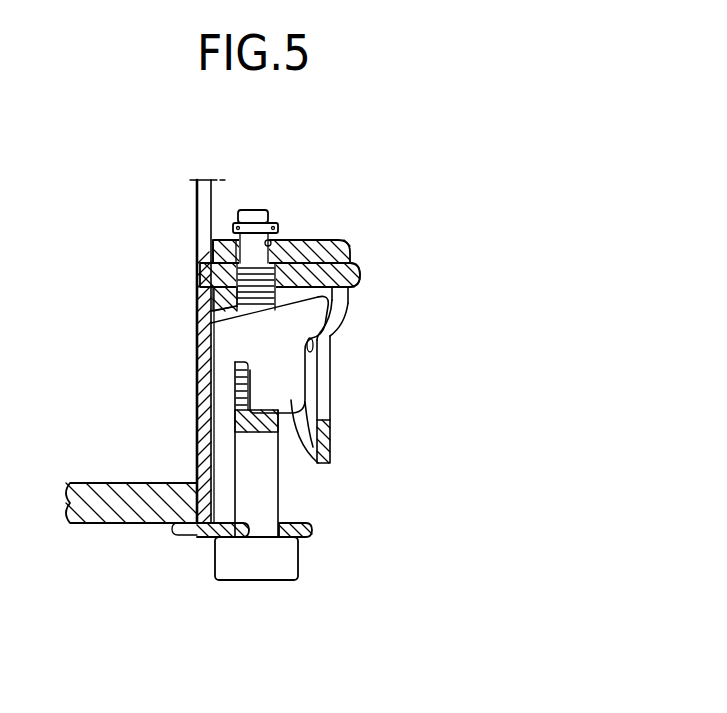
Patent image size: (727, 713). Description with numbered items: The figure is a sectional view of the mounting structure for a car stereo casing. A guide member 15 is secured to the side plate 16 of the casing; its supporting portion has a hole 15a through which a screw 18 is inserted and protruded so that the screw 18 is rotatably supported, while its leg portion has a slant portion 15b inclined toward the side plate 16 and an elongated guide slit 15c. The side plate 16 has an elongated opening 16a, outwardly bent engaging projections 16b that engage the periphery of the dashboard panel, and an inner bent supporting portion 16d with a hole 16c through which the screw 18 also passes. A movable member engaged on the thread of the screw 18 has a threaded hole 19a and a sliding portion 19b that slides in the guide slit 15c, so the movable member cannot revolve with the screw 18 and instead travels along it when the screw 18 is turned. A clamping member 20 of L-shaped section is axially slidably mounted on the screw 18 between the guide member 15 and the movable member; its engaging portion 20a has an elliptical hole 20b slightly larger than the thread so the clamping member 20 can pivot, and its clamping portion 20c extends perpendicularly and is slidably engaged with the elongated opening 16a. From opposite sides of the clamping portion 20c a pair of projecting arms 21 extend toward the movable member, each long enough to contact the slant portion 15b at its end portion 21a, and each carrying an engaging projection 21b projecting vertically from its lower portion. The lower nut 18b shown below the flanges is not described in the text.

The guide member 15 is at (332, 442).
The hole 15a is at (270, 242).
The slant portion 15b is at (343, 331).
The guide slit 15c is at (333, 393).
The side plate 16 is at (194, 222).
The elongated opening 16a is at (204, 433).
The engaging projections 16b is at (185, 536).
The hole 16c is at (245, 540).
The supporting portion 16d is at (290, 520).
The screw 18 is at (292, 402).
The nut of bolt 18b is at (268, 560).
The threaded hole 19a is at (211, 311).
The sliding portion 19b is at (355, 277).
The clamping member 20 is at (199, 276).
The engaging portion 20a is at (297, 240).
The hole 20b is at (230, 240).
The clamping portion 20c is at (212, 408).
The projecting arms 21 is at (350, 304).
The end portion 21a is at (312, 348).
The engaging projection 21b is at (318, 463).